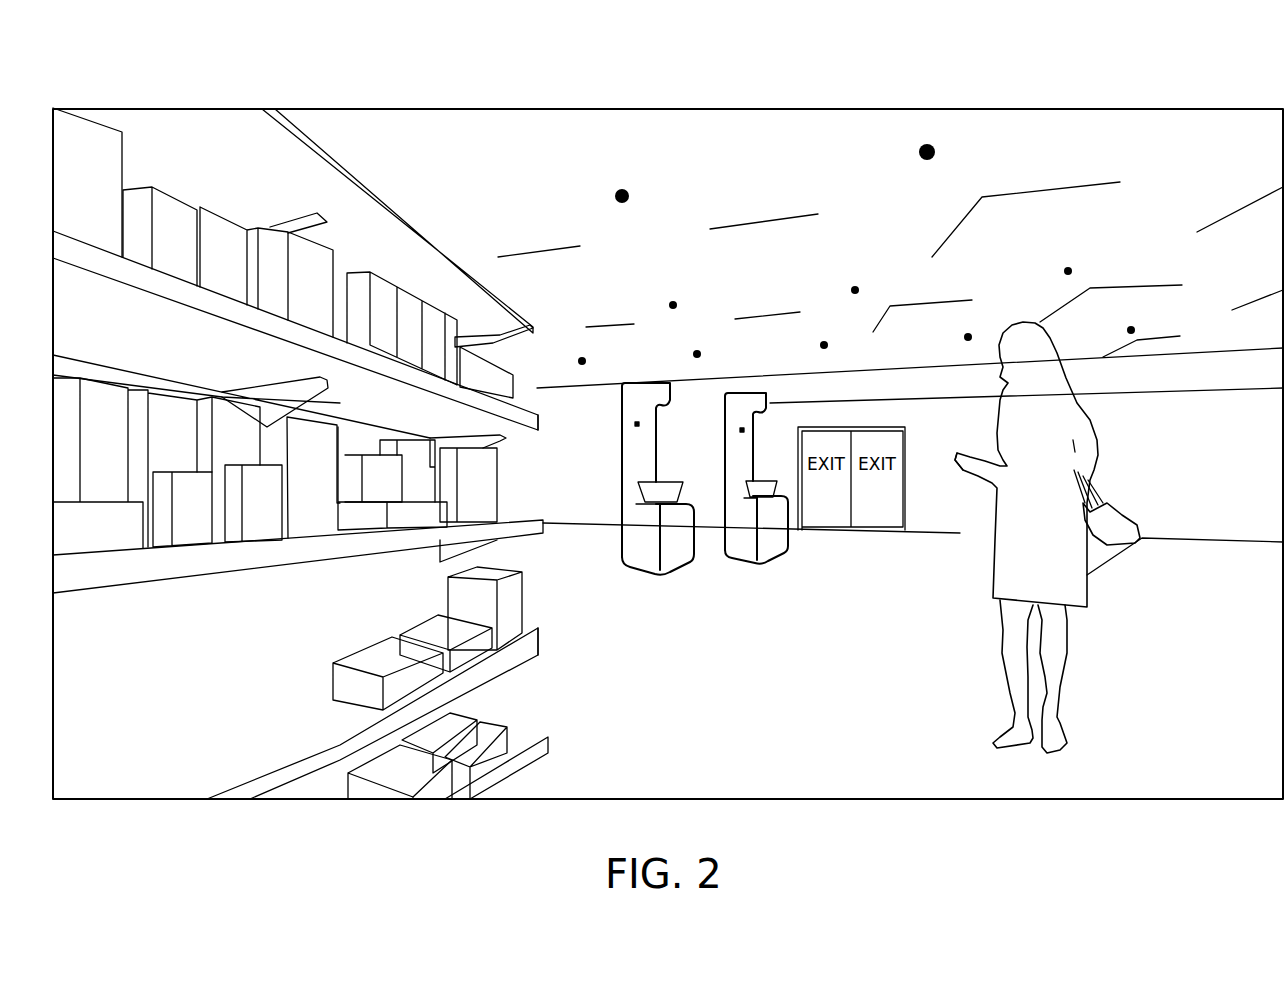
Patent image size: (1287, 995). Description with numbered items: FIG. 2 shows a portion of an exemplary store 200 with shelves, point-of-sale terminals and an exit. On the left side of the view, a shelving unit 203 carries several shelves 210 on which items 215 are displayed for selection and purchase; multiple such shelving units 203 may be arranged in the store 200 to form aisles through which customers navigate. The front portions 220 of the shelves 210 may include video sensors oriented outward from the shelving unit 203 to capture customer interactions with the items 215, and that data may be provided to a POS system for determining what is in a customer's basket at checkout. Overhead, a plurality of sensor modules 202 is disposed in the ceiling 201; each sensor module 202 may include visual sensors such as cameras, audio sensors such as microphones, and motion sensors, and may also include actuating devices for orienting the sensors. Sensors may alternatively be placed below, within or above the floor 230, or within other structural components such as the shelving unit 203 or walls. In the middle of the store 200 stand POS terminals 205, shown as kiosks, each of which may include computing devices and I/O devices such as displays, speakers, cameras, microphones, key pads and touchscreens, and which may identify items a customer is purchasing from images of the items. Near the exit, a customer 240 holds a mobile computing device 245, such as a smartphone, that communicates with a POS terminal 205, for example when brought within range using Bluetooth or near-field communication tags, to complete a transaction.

The store 200 is at (1180, 72).
The ceiling 201 is at (1173, 167).
The sensor modules 202 is at (627, 191).
The shelving units 203 is at (335, 453).
The POS terminals 205 is at (655, 366).
The shelves 210 is at (420, 236).
The items 215 is at (312, 525).
The front portions 220 is at (512, 412).
The floor 230 is at (1125, 753).
The customer 240 is at (1115, 435).
The mobile computing device 245 is at (950, 451).